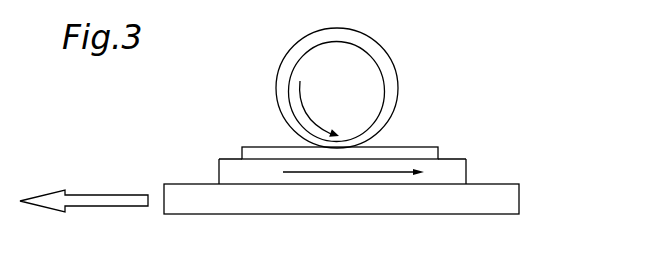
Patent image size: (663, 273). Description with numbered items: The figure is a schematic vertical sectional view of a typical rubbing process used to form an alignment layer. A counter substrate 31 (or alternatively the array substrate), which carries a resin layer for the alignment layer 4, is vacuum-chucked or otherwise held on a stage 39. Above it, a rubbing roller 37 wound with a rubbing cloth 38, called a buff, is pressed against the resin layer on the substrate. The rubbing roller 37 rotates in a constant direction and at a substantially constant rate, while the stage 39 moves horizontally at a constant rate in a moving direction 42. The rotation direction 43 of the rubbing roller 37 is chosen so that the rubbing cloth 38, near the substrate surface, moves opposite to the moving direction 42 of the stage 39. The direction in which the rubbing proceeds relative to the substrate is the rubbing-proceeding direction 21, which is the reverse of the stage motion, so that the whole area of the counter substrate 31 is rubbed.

The rubbing cloth 38 is at (368, 45).
The rubbing roller 37 is at (363, 103).
The rotation direction 43 is at (310, 110).
The alignment layer 4 is at (407, 150).
The counter substrate 31 is at (462, 170).
The rubbing-proceeding direction 21 is at (337, 173).
The stage 39 is at (207, 200).
The moving direction 42 is at (102, 202).